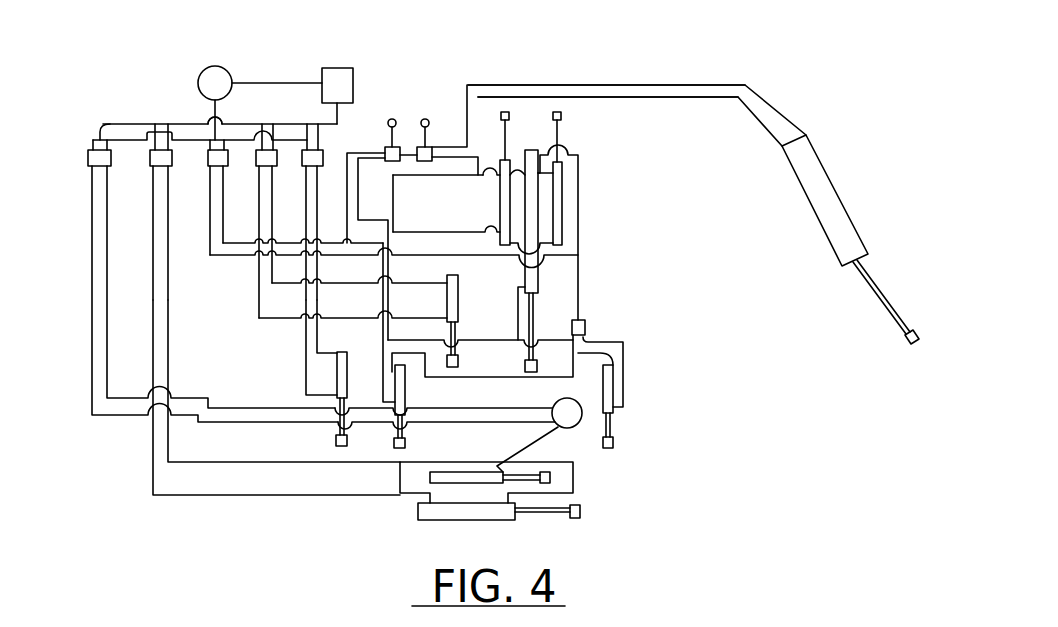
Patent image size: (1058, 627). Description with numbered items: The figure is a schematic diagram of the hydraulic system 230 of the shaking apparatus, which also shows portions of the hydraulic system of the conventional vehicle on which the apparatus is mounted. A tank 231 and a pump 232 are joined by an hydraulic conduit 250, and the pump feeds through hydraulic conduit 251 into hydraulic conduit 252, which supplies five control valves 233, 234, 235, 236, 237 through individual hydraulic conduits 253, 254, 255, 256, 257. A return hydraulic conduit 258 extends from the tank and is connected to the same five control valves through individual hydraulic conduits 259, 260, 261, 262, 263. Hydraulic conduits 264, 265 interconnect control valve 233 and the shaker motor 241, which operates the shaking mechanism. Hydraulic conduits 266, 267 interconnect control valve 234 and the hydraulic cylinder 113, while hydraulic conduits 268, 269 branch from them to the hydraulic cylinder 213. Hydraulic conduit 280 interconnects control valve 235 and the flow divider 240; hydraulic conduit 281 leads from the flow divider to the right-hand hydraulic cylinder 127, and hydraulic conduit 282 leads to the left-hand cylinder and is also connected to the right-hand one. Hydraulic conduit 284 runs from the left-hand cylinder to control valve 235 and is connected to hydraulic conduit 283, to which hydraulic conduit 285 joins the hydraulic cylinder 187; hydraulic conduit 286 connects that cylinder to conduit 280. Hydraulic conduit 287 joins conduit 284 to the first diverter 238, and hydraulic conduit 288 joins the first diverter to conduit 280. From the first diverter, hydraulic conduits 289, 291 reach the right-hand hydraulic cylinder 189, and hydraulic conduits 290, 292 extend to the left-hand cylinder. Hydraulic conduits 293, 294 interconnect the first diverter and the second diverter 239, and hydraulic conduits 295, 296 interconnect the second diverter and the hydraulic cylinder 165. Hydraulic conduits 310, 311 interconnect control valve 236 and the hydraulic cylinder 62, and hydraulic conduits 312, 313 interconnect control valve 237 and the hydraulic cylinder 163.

The hydraulic cylinder 62 is at (458, 295).
The hydraulic cylinder 113 is at (470, 520).
The hydraulic cylinder 127 is at (405, 385).
The hydraulic cylinder 163 is at (347, 366).
The hydraulic cylinder 165 is at (823, 166).
The hydraulic cylinder 187 is at (538, 225).
The hydraulic cylinder 189 is at (500, 200).
The hydraulic cylinder 213 is at (473, 472).
The hydraulic system 230 is at (561, 80).
The tank 231 is at (341, 68).
The pump 232 is at (224, 70).
The control valve 233 is at (87, 158).
The control valve 234 is at (155, 168).
The control valve 235 is at (210, 168).
The control valve 236 is at (260, 168).
The control valve 237 is at (306, 168).
The first diverter 238 is at (390, 147).
The second diverter 239 is at (432, 147).
The flow divider 240 is at (585, 320).
The shaker motor 241 is at (552, 421).
The hydraulic conduit 250 is at (276, 83).
The hydraulic conduit 251 is at (218, 108).
The hydraulic conduit 252 is at (205, 139).
The hydraulic conduit 253 is at (97, 142).
The hydraulic conduit 254 is at (150, 152).
The hydraulic conduit 255 is at (208, 152).
The hydraulic conduit 256 is at (258, 152).
The hydraulic conduit 257 is at (305, 152).
The hydraulic conduit 258 is at (331, 124).
The hydraulic conduit 259 is at (103, 122).
The hydraulic conduit 260 is at (154, 125).
The hydraulic conduit 261 is at (229, 125).
The hydraulic conduit 262 is at (312, 140).
The hydraulic conduit 263 is at (322, 150).
The hydraulic conduit 264 is at (92, 404).
The hydraulic conduit 265 is at (191, 398).
The hydraulic conduit 266 is at (153, 475).
The hydraulic conduit 267 is at (212, 462).
The hydraulic conduit 268 is at (400, 480).
The hydraulic conduit 269 is at (503, 466).
The hydraulic conduit 280 is at (210, 241).
The hydraulic conduit 281 is at (605, 342).
The hydraulic conduit 282 is at (508, 377).
The hydraulic conduit 283 is at (478, 340).
The hydraulic conduit 284 is at (388, 304).
The hydraulic conduit 285 is at (518, 300).
The hydraulic conduit 286 is at (578, 175).
The hydraulic conduit 287 is at (393, 232).
The hydraulic conduit 288 is at (347, 212).
The hydraulic conduit 289 is at (401, 229).
The hydraulic conduit 290 is at (487, 233).
The hydraulic conduit 291 is at (440, 180).
The hydraulic conduit 292 is at (487, 175).
The hydraulic conduit 293 is at (400, 178).
The hydraulic conduit 294 is at (428, 147).
The hydraulic conduit 295 is at (697, 97).
The hydraulic conduit 296 is at (643, 85).
The hydraulic conduit 310 is at (355, 315).
The hydraulic conduit 311 is at (366, 282).
The hydraulic conduit 312 is at (306, 343).
The hydraulic conduit 313 is at (318, 352).